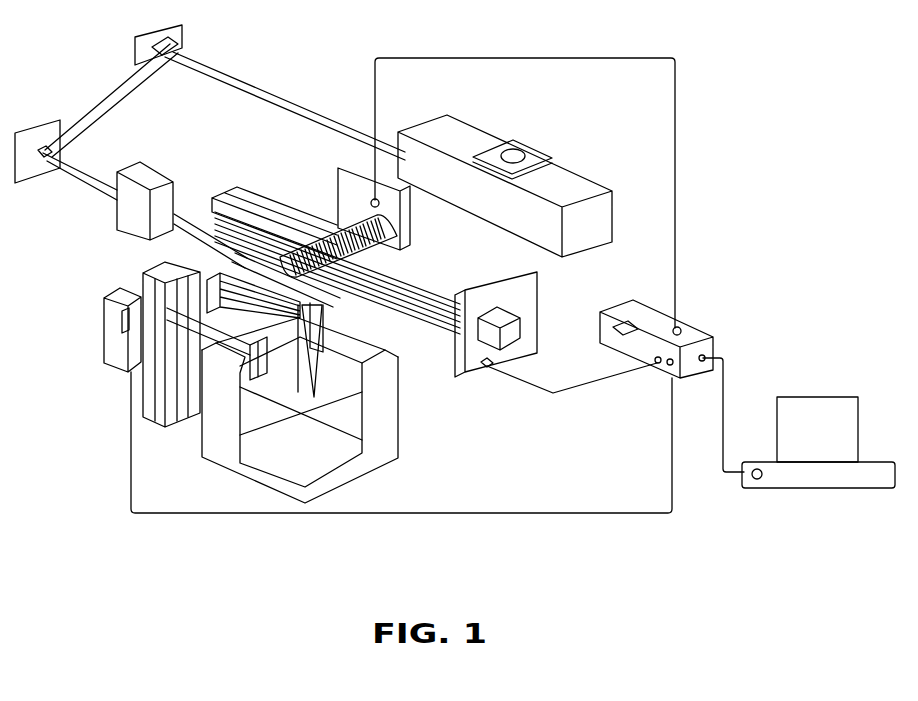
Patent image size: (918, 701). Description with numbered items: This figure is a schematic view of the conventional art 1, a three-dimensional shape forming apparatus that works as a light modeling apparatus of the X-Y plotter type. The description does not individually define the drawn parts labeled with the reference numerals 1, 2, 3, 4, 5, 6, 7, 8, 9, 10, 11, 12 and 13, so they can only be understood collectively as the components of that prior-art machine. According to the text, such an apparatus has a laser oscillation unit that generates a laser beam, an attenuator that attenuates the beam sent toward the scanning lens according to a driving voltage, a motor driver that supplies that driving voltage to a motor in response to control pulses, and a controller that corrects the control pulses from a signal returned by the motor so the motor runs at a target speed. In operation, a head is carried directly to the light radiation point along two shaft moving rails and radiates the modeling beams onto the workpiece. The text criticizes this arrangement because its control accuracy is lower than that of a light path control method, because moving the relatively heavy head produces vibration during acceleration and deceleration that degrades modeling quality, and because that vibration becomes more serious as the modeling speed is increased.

The laser source 1 is at (572, 177).
The controller unit 2 is at (688, 382).
The slider plate 3 is at (538, 318).
The support plate 4 is at (412, 233).
The cross bar 5 is at (345, 222).
The guide block 6 is at (250, 188).
The container 7 is at (400, 430).
The needle 8 is at (273, 387).
The holder block 9 is at (125, 228).
The mounting block 10 is at (104, 333).
The bracket 11 is at (33, 183).
The bracket arm 12 is at (184, 30).
The computer 13 is at (818, 490).